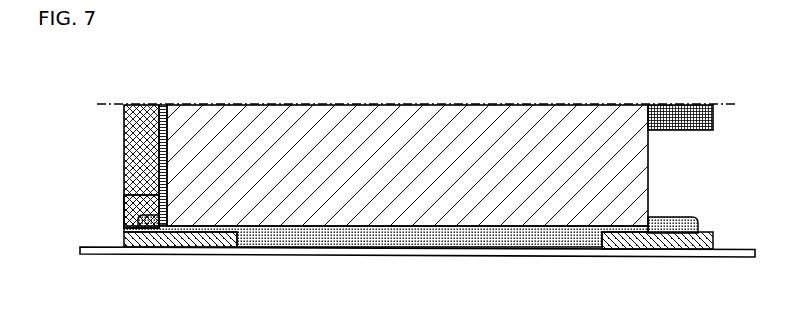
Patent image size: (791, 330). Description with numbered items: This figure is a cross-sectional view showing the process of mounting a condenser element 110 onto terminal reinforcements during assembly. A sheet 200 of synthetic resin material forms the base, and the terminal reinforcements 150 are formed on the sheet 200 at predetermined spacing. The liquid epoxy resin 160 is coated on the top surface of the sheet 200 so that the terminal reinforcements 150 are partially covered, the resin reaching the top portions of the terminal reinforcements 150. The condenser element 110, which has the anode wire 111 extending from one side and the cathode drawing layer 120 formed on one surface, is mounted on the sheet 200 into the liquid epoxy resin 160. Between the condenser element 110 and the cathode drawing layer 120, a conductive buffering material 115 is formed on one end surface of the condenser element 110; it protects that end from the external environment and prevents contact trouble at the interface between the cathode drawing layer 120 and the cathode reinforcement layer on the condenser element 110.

The condenser element 110 is at (418, 112).
The anode wire 111 is at (683, 112).
The conductive buffering material 115 is at (124, 194).
The cathode drawing layer 120 is at (124, 153).
The terminal reinforcement 150 is at (658, 242).
The liquid epoxy resin 160 is at (523, 237).
The sheet 200 is at (420, 254).